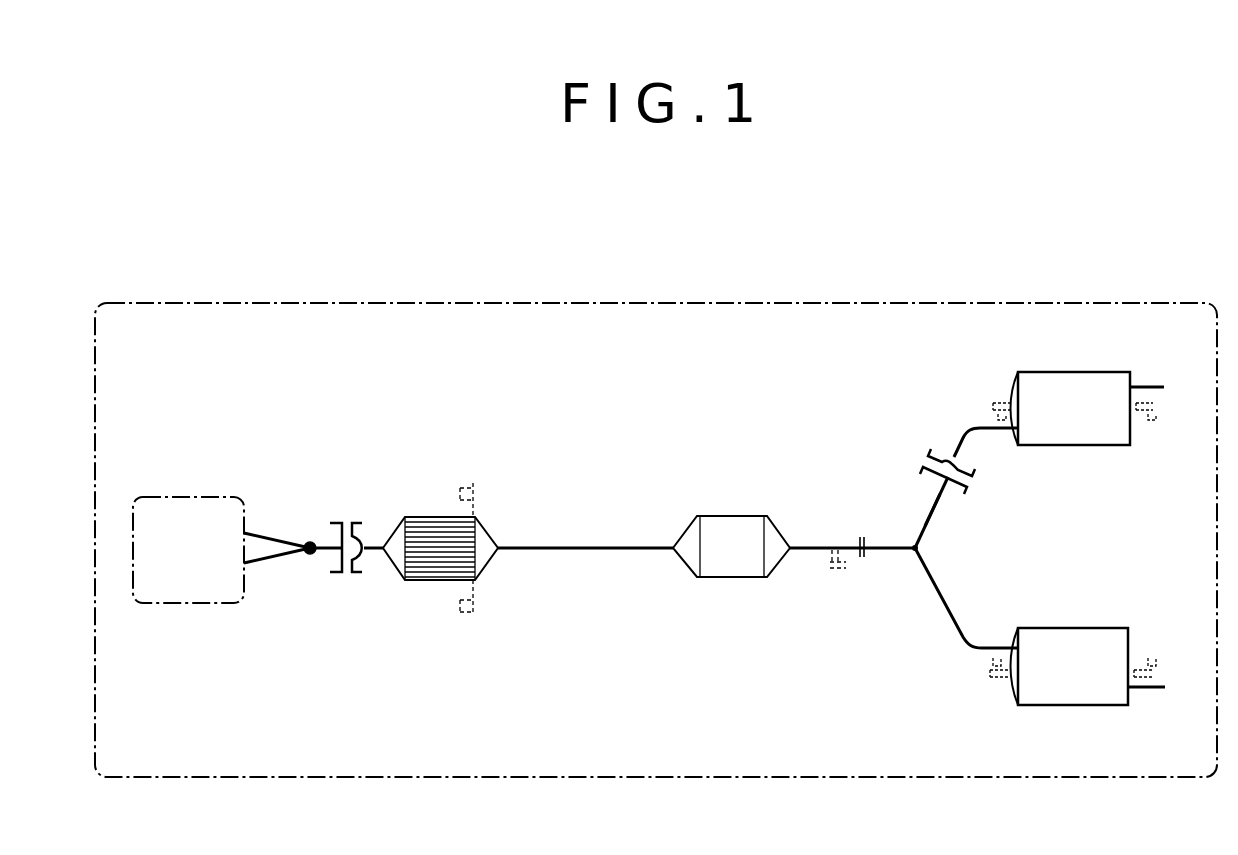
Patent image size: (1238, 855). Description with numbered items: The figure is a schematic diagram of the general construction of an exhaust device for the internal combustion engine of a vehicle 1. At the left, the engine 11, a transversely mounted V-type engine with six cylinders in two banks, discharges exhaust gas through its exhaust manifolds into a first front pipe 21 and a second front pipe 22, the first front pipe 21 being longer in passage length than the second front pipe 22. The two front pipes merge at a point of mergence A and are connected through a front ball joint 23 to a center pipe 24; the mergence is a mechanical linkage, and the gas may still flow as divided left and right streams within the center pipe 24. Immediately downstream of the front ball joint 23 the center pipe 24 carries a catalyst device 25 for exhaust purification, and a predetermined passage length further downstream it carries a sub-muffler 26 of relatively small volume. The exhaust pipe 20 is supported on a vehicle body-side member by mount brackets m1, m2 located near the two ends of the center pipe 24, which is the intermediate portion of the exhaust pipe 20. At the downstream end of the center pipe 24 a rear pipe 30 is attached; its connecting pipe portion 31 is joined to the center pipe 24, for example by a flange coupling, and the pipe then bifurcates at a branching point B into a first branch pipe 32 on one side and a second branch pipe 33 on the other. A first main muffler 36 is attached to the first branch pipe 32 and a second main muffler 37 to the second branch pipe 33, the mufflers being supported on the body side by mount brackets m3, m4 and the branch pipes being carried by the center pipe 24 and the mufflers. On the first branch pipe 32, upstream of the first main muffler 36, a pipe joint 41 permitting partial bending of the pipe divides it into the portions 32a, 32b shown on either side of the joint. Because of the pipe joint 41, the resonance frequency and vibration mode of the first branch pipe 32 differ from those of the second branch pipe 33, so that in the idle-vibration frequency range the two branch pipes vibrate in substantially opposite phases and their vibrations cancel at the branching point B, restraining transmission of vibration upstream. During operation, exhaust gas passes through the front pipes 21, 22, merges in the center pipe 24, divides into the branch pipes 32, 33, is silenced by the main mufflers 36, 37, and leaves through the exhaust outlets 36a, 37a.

The vehicle 1 is at (656, 303).
The engine 11 is at (186, 497).
The exhaust pipe 20 is at (522, 462).
The first front pipe 21 is at (266, 537).
The second front pipe 22 is at (279, 560).
The point of mergence A is at (310, 541).
The front ball joint 23 is at (351, 511).
The center pipe 24 is at (595, 547).
The catalyst device 25 is at (436, 581).
The sub-muffler 26 is at (731, 516).
The rear pipe 30 is at (873, 585).
The branching point B is at (912, 556).
The connecting pipe portion 31 is at (880, 546).
The first branch pipe 32 is at (947, 501).
The upstream portion of first branch pipe 32a is at (921, 501).
The downstream portion of first branch pipe 32b is at (966, 430).
The second branch pipe 33 is at (946, 618).
The first main muffler 36 is at (1057, 372).
The exhaust outlet 36a is at (1148, 386).
The second main muffler 37 is at (1058, 628).
The exhaust outlet 37a is at (1152, 690).
The pipe joint 41 is at (925, 456).
The mount bracket m1 is at (480, 612).
The mount bracket m2 is at (830, 566).
The mount bracket m3 is at (992, 400).
The mount bracket m4 is at (988, 676).